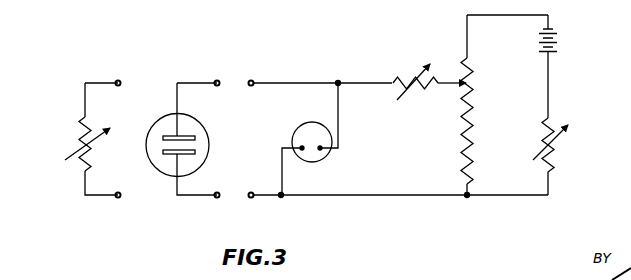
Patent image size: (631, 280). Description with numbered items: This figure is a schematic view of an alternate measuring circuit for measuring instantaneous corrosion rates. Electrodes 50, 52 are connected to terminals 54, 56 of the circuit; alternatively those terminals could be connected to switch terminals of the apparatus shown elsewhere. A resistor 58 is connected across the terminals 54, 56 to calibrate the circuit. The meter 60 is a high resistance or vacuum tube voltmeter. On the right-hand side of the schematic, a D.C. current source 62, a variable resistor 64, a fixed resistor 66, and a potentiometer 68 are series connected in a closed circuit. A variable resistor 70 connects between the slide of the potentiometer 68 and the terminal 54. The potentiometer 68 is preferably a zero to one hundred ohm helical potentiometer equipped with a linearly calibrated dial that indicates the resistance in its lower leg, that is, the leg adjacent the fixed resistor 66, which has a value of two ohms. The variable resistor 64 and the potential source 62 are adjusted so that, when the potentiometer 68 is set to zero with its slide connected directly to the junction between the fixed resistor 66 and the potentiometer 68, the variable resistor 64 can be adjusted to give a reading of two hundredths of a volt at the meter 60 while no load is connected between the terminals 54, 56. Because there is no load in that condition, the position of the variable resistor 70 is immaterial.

The electrode 50 is at (195, 137).
The electrode 52 is at (195, 153).
The terminal 54 is at (253, 81).
The terminal 56 is at (253, 197).
The resistor 58 is at (85, 123).
The meter 60 is at (307, 122).
The D.C. current source 62 is at (560, 38).
The variable resistor 64 is at (556, 151).
The fixed resistor 66 is at (466, 138).
The potentiometer 68 is at (473, 81).
The variable resistor 70 is at (394, 76).